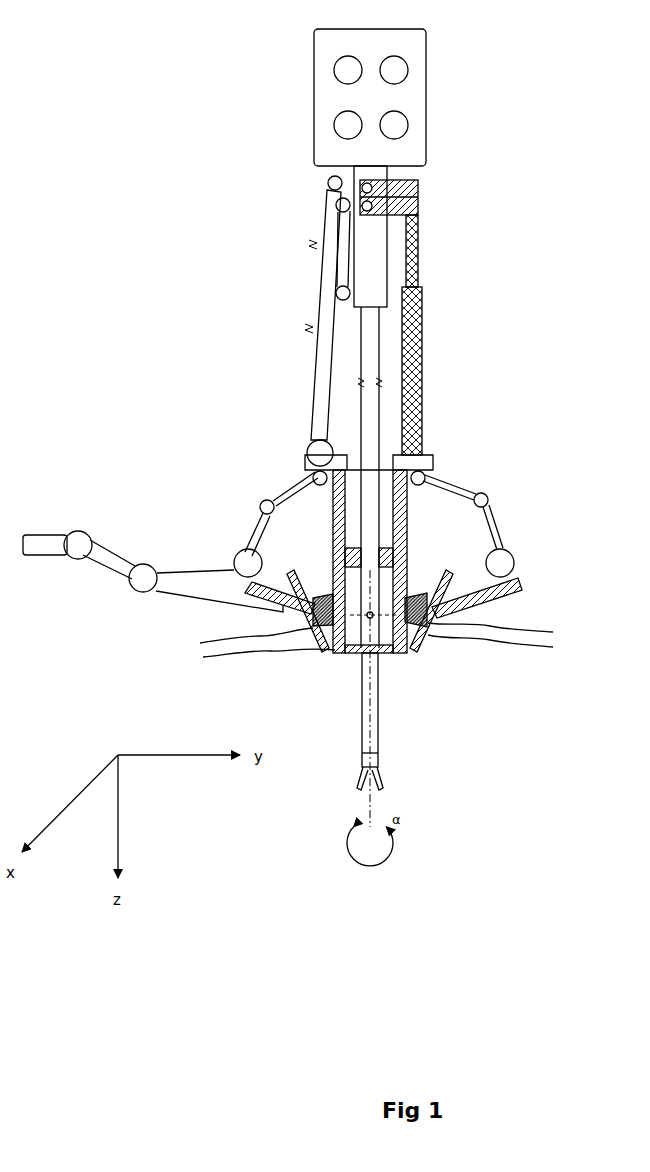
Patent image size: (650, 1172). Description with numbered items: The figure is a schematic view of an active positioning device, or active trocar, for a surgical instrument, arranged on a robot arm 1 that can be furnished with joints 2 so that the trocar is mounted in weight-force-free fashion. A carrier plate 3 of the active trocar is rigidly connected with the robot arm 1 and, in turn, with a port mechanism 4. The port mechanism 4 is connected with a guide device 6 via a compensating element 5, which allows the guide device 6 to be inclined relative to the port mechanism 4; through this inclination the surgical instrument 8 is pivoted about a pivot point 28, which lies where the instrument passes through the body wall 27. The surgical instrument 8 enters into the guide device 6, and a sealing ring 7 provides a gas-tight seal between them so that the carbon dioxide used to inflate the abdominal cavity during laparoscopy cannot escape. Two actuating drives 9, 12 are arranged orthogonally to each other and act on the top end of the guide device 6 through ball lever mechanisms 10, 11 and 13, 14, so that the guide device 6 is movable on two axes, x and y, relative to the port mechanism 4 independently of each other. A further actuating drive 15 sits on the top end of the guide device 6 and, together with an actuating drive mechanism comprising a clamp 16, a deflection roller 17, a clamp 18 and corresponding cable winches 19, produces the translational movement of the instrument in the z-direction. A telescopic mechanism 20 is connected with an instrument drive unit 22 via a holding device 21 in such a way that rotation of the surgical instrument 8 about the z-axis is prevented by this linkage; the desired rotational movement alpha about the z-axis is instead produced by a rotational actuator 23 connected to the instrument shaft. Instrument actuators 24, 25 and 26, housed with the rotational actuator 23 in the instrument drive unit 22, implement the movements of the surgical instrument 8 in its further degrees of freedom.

The robot arm 1 is at (173, 597).
The joints 2 is at (147, 566).
The carrier plate 3 is at (270, 587).
The port mechanism 4 is at (298, 578).
The compensating element 5 is at (415, 595).
The guide device 6 is at (408, 526).
The sealing ring 7 is at (394, 552).
The surgical instrument 8 is at (379, 707).
The actuating drive 9 is at (237, 550).
The ball lever mechanism 10 is at (258, 520).
The ball lever mechanism 11 is at (317, 486).
The actuating drive 12 is at (510, 553).
The ball lever mechanism 13 is at (492, 520).
The ball lever mechanism 14 is at (420, 487).
The actuating drive 15 is at (307, 453).
The clamp 16 is at (328, 183).
The deflection roller 17 is at (336, 205).
The clamp 18 is at (346, 302).
The cable winches 19 is at (324, 347).
The telescopic mechanism 20 is at (424, 410).
The holding device 21 is at (398, 190).
The instrument drive unit 22 is at (426, 56).
The rotational actuator 23 is at (349, 56).
The instrument actuator 24 is at (396, 56).
The instrument actuator 25 is at (334, 125).
The instrument actuator 26 is at (408, 125).
The body surface 27 is at (223, 657).
The pivot point 28 is at (372, 618).